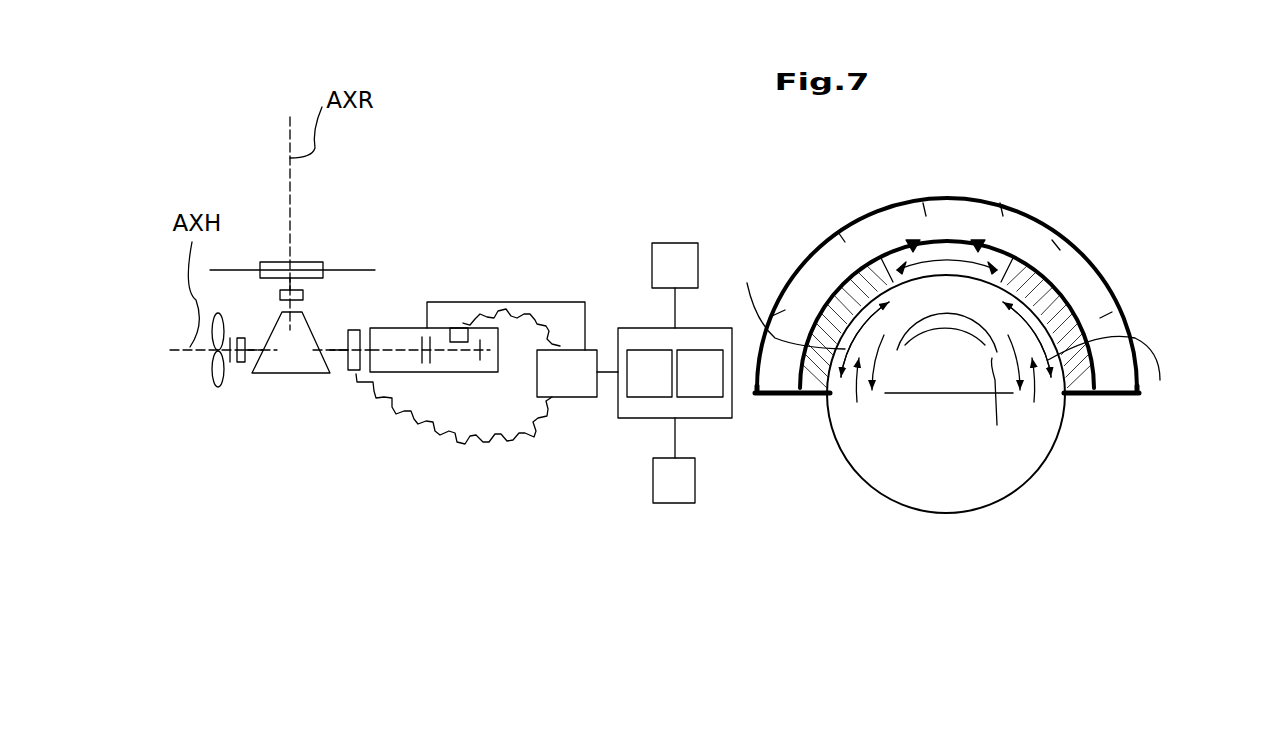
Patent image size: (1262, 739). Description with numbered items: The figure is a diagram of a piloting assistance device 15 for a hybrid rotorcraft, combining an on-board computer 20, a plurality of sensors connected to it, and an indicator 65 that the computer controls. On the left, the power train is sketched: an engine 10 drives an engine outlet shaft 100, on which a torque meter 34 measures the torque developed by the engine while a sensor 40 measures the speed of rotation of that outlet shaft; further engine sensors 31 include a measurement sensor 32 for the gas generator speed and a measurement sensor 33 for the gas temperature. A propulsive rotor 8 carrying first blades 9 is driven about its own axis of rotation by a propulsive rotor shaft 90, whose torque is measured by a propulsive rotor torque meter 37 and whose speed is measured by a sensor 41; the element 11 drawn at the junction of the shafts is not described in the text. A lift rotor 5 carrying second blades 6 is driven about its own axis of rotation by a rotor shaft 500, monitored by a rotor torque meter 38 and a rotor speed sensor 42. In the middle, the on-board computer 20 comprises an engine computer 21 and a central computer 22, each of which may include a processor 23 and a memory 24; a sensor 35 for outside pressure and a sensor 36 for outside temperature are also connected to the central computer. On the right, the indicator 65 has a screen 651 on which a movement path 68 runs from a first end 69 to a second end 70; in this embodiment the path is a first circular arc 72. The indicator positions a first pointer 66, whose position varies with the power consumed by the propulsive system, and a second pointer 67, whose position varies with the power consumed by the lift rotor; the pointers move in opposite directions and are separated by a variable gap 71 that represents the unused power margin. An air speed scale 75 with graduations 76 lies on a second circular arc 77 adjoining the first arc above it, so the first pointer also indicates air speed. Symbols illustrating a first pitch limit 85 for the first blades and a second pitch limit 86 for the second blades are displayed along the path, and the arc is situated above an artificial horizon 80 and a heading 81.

The lift rotor 5 is at (339, 256).
The second blades 6 is at (360, 268).
The propulsive rotor 8 is at (204, 384).
The first blades 9 is at (231, 346).
The engine 10 is at (634, 341).
The gearbox 11 is at (322, 384).
The piloting assistance device 15 is at (384, 356).
The on-board computer 20 is at (634, 370).
The engine computer 21 is at (567, 373).
The central computer 22 is at (664, 341).
The processor 23 is at (649, 373).
The memory 24 is at (700, 373).
The sensors 31 is at (483, 288).
The measurement sensor 32 is at (457, 345).
The measurement sensor 33 is at (423, 328).
The torque meter 34 is at (366, 313).
The sensor for sensing engine speed of rotation 40 is at (352, 326).
The sensor for sensing outside pressure 35 is at (653, 243).
The sensor for sensing outside temperature 36 is at (655, 503).
The propulsive rotor torque meter 37 is at (250, 396).
The sensor for sensing propulsive rotor speed of rotation 41 is at (243, 364).
The sensor for sensing rotor speed of rotation 42 is at (263, 216).
The rotor torque meter 38 is at (288, 262).
The indicator 65 is at (969, 368).
The first pointer 66 is at (878, 262).
The second pointer 67 is at (1006, 255).
The movement path 68 is at (1087, 333).
The first end 69 is at (805, 396).
The second end 70 is at (1078, 398).
The gap 71 is at (952, 247).
The first circular arc 72 is at (818, 404).
The air speed scale 75 is at (1085, 250).
The graduations 76 is at (830, 243).
The second circular arc 77 is at (760, 418).
The artificial horizon 80 is at (928, 393).
The heading 81 is at (920, 333).
The first pitch limit 85 is at (911, 243).
The second pitch limit 86 is at (980, 243).
The propulsive rotor shaft 90 is at (247, 364).
The engine outlet shaft 100 is at (352, 372).
The rotor shaft 500 is at (301, 291).
The screen 651 is at (1055, 478).